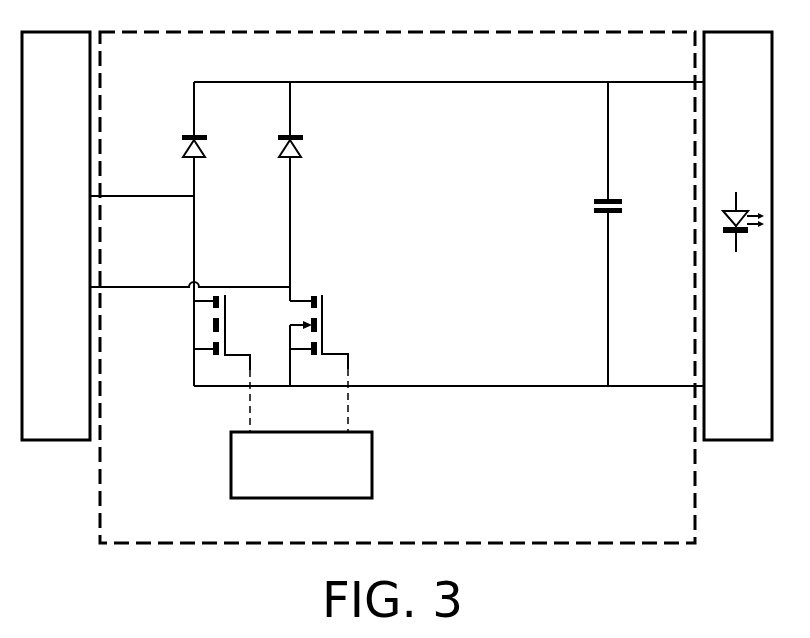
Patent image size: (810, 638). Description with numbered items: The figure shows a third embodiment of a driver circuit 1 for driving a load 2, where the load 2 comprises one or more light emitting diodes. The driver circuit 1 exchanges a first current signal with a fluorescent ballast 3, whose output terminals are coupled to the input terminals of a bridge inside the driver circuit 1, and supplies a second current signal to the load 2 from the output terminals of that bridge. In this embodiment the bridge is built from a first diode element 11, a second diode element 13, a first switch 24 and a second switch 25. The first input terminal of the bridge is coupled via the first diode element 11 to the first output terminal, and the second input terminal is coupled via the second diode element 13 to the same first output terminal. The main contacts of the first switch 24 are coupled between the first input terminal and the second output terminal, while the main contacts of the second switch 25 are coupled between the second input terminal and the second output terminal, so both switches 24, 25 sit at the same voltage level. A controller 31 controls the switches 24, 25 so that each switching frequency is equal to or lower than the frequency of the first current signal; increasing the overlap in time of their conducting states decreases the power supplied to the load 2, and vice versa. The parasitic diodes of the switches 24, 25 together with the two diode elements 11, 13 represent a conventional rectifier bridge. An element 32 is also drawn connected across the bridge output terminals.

The driver circuit 1 is at (125, 64).
The load 2 is at (730, 64).
The fluorescent ballast 3 is at (47, 64).
The first diode element 11 is at (182, 152).
The second diode element 13 is at (302, 152).
The first switch 24 is at (207, 325).
The second switch 25 is at (324, 328).
The controller 31 is at (282, 476).
The capacitor 32 is at (601, 214).